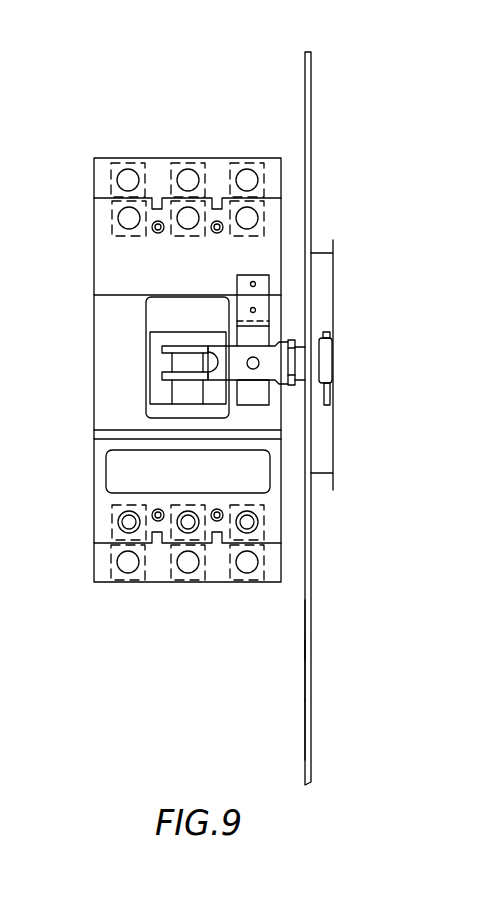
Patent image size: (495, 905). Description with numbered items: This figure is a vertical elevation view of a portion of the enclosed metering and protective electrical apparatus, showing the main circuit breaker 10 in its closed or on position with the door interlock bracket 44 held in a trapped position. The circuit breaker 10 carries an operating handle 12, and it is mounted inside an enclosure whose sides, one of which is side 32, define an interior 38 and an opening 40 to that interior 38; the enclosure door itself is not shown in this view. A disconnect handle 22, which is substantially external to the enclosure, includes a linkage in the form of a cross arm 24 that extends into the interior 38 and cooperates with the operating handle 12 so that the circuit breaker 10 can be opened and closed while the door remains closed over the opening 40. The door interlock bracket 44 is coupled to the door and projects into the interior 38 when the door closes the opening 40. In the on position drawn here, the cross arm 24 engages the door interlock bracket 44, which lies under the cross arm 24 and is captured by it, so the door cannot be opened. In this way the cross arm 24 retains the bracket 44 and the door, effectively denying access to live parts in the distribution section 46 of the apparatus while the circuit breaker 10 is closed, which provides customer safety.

The main circuit breaker 10 is at (92, 303).
The operating handle 12 is at (180, 362).
The disconnect handle 22 is at (362, 414).
The cross arm 24 is at (236, 356).
The side 32 is at (311, 697).
The interior 38 is at (280, 722).
The opening 40 is at (305, 628).
The door interlock bracket 44 is at (263, 298).
The distribution section 46 is at (273, 670).